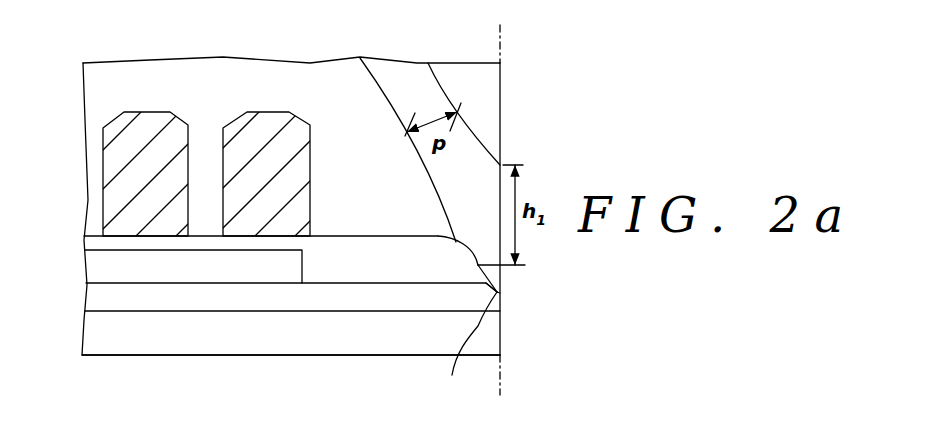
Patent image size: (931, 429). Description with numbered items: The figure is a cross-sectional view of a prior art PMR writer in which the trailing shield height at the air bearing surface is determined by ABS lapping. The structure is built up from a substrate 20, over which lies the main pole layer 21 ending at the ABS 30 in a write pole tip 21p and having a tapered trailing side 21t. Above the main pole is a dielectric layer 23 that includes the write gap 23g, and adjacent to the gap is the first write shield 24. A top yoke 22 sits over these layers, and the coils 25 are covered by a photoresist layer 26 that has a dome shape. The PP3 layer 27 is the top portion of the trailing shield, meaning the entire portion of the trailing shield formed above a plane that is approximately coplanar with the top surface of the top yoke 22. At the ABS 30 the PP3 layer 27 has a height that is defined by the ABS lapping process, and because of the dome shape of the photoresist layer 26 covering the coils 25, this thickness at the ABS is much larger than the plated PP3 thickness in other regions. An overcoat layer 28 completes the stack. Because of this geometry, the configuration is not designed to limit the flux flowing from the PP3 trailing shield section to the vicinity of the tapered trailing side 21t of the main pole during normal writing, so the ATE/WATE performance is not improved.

The substrate 20 is at (100, 336).
The main pole layer 21 is at (100, 301).
The write pole tip 21p is at (500, 310).
The tapered trailing side 21t is at (466, 345).
The top yoke 22 is at (100, 273).
The dielectric layer 23 is at (96, 244).
The write gap 23g is at (497, 292).
The first write shield 24 is at (488, 275).
The coils 25 is at (250, 171).
The photoresist layer 26 is at (95, 82).
The PP3 layer 27 is at (413, 68).
The overcoat layer 28 is at (490, 103).
The ABS 30 is at (500, 28).